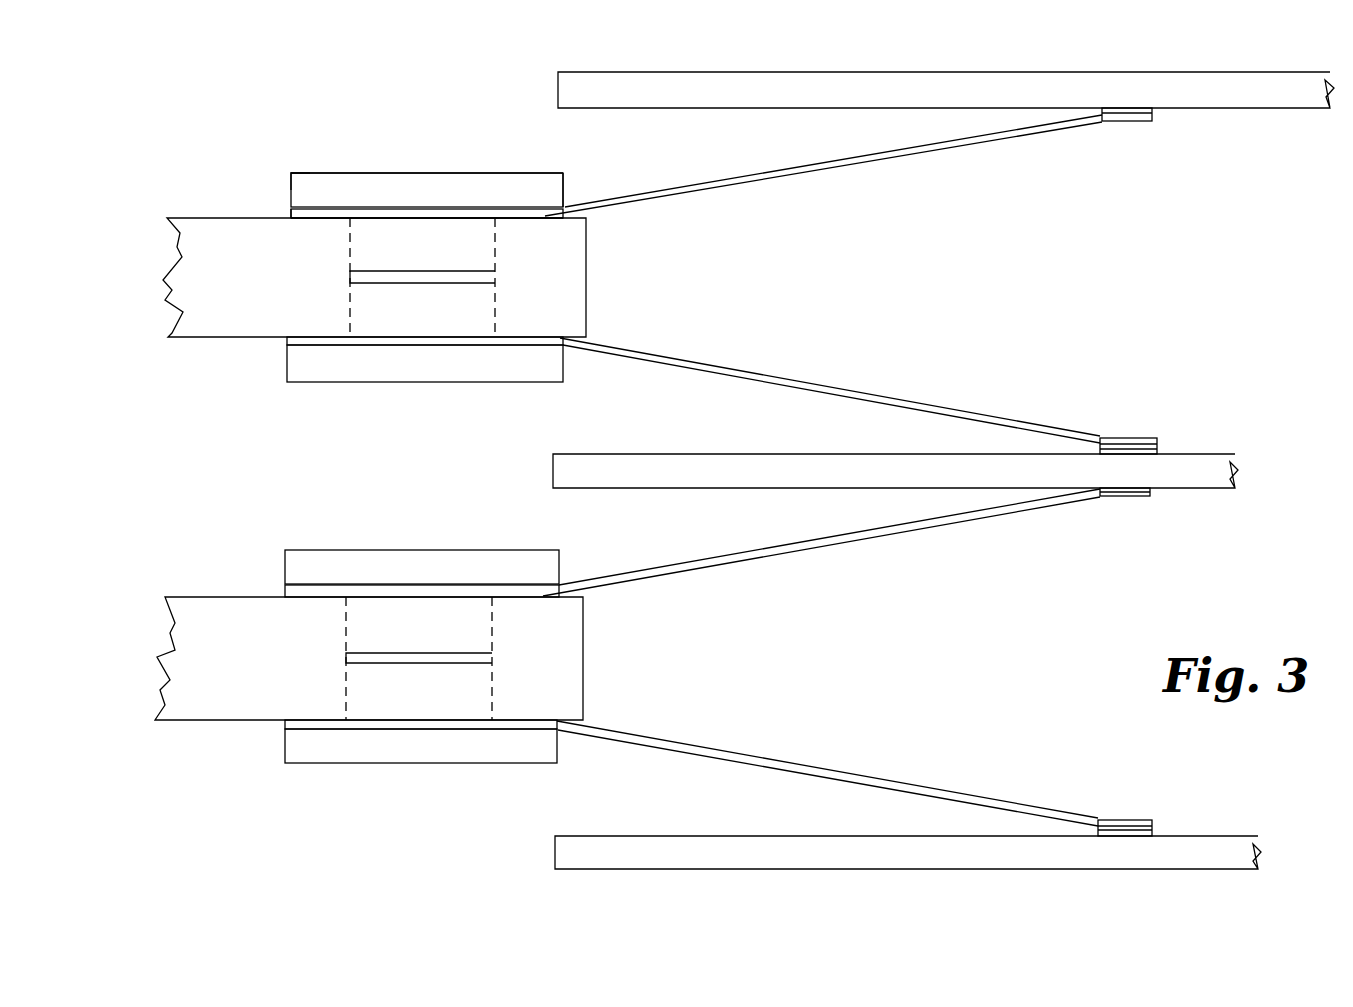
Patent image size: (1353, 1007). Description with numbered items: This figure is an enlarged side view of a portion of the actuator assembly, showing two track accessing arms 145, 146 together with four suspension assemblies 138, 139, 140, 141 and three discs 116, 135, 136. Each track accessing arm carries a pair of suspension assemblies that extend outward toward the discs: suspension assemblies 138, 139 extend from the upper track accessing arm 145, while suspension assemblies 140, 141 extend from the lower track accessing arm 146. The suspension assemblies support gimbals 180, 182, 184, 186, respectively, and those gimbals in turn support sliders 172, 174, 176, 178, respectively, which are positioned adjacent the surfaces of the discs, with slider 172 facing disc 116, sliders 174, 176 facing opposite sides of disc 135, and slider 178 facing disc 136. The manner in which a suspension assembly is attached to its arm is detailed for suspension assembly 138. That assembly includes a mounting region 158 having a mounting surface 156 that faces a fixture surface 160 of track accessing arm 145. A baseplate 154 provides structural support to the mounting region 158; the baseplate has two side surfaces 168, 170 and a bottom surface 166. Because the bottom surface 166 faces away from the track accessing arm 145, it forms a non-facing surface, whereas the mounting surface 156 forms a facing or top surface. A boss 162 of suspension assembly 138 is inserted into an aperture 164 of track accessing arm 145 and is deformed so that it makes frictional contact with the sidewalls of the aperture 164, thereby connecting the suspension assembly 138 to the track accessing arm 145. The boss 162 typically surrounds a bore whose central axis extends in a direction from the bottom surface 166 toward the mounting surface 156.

The disc 116 is at (1100, 80).
The disc 135 is at (1172, 470).
The disc 136 is at (1237, 847).
The suspension assembly 138 is at (791, 181).
The suspension assembly 139 is at (727, 361).
The suspension assembly 140 is at (798, 555).
The suspension assembly 141 is at (769, 755).
The track accessing arm 145 is at (178, 217).
The track accessing arm 146 is at (215, 596).
The baseplate 154 is at (398, 185).
The mounting surface 156 is at (512, 209).
The mounting region 158 is at (288, 209).
The fixture surface 160 is at (320, 220).
The boss 162 is at (480, 240).
The aperture 164 is at (487, 283).
The bottom surface 166 is at (342, 173).
The side surface 168 is at (567, 178).
The side surface 170 is at (290, 177).
The slider 172 is at (1152, 113).
The slider 174 is at (1160, 440).
The slider 176 is at (1152, 491).
The slider 178 is at (1152, 828).
The gimbal 180 is at (1118, 123).
The gimbal 182 is at (1108, 439).
The gimbal 184 is at (1115, 498).
The gimbal 186 is at (1100, 821).